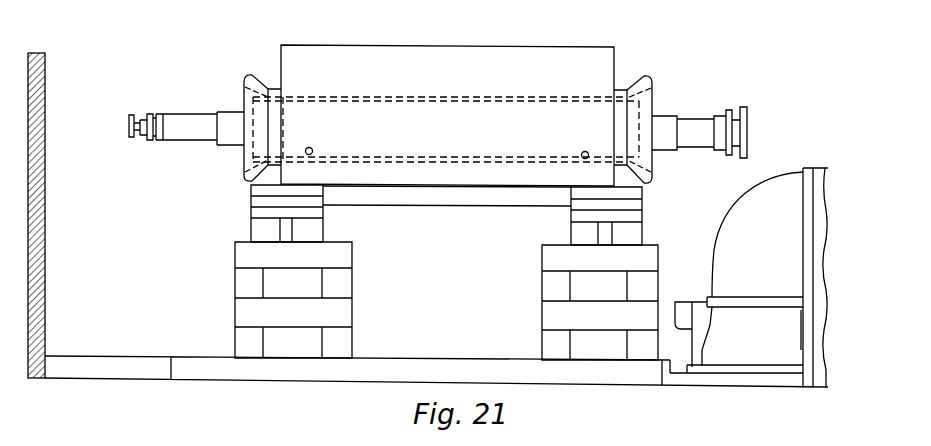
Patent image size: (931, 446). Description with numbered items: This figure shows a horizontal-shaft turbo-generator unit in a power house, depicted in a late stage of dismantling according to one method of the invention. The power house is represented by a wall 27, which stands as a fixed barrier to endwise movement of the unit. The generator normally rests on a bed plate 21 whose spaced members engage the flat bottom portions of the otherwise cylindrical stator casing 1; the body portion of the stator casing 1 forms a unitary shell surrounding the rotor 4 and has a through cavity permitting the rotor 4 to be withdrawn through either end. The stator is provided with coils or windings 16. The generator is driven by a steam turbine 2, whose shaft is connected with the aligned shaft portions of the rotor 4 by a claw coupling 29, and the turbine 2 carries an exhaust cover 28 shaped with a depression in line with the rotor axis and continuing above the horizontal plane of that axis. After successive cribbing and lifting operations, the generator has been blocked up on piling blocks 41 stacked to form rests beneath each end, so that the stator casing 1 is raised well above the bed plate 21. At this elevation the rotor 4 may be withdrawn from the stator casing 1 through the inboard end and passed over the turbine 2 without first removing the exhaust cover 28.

The stator casing 1 is at (447, 46).
The steam turbine 2 is at (820, 172).
The rotor 4 is at (512, 100).
The coils or windings 16 is at (649, 78).
The bed plate 21 is at (318, 378).
The wall 27 is at (46, 120).
The exhaust cover 28 is at (752, 193).
The claw coupling 29 is at (750, 118).
The piling blocks 41 is at (318, 231).